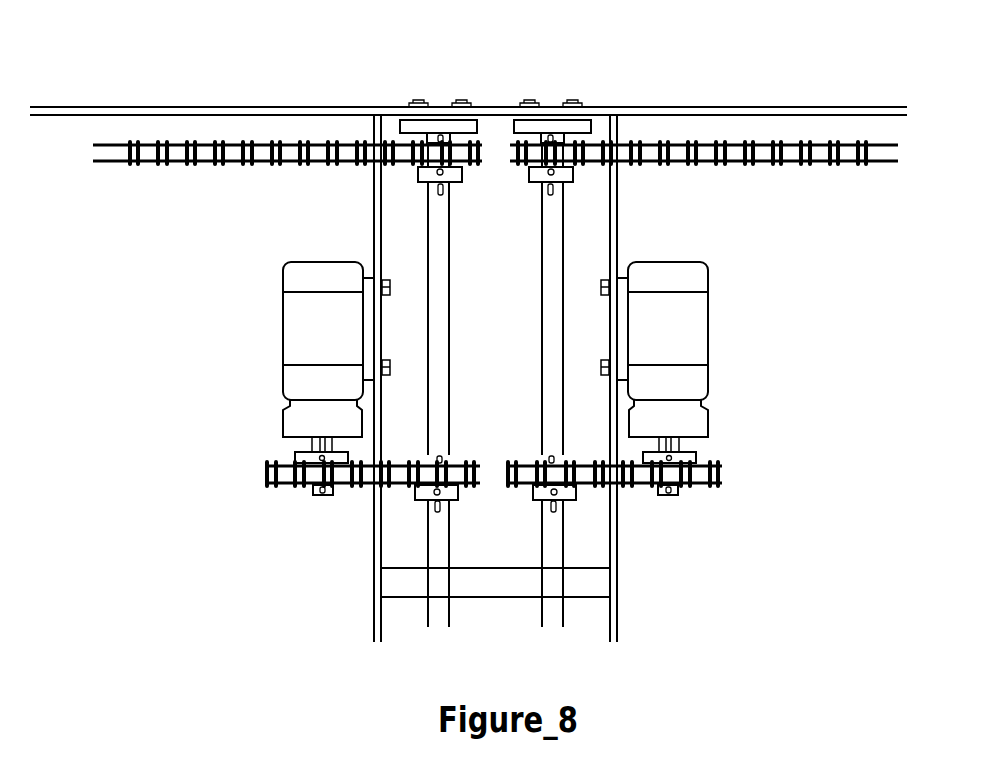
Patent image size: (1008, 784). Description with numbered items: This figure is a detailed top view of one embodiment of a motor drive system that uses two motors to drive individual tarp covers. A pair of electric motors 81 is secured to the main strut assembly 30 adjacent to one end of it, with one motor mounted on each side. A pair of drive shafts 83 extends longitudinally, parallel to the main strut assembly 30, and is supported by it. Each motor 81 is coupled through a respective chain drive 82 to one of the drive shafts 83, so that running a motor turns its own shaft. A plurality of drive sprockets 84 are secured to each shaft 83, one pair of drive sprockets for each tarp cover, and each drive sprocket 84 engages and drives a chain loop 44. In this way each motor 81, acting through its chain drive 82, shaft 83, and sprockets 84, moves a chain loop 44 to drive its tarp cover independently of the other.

The main strut assembly 30 is at (615, 598).
The chain loop 44 is at (845, 165).
The electric motor 81 is at (687, 335).
The chain drive 82 is at (633, 487).
The drive shaft 83 is at (565, 227).
The drive sprocket 84 is at (570, 145).